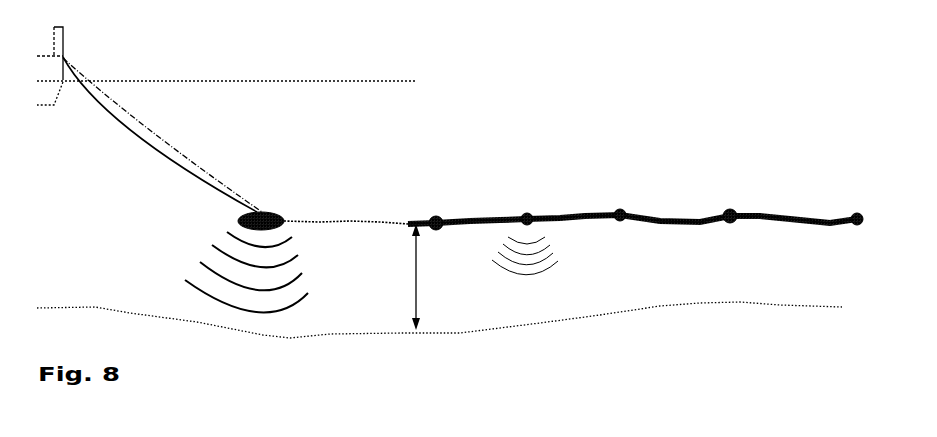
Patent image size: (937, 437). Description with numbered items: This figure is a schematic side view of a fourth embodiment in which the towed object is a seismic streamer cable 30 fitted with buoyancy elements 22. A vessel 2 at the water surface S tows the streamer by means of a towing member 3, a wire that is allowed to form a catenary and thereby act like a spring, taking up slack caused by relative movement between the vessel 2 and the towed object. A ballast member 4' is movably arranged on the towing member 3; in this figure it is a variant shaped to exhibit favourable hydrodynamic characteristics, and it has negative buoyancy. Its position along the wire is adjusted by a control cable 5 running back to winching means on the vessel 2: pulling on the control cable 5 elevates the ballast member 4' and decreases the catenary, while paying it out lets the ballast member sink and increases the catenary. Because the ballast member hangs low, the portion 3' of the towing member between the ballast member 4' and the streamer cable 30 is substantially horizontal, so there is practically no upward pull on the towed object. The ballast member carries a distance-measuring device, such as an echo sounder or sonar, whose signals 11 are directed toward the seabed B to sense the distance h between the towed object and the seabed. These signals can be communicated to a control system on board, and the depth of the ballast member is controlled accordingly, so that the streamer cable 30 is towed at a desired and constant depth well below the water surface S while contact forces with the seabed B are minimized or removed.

The vessel 2 is at (64, 51).
The towing member 3 is at (160, 134).
The control cable 5 is at (153, 129).
The ballast member 4' is at (240, 177).
The portion of the towing member 3' is at (346, 177).
The buoyancy elements 22 is at (443, 213).
The seismic streamer cable 30 is at (586, 214).
The signals 11 is at (192, 262).
The water surface S is at (361, 80).
The seabed B is at (94, 305).
The distance to the seabed h is at (423, 277).